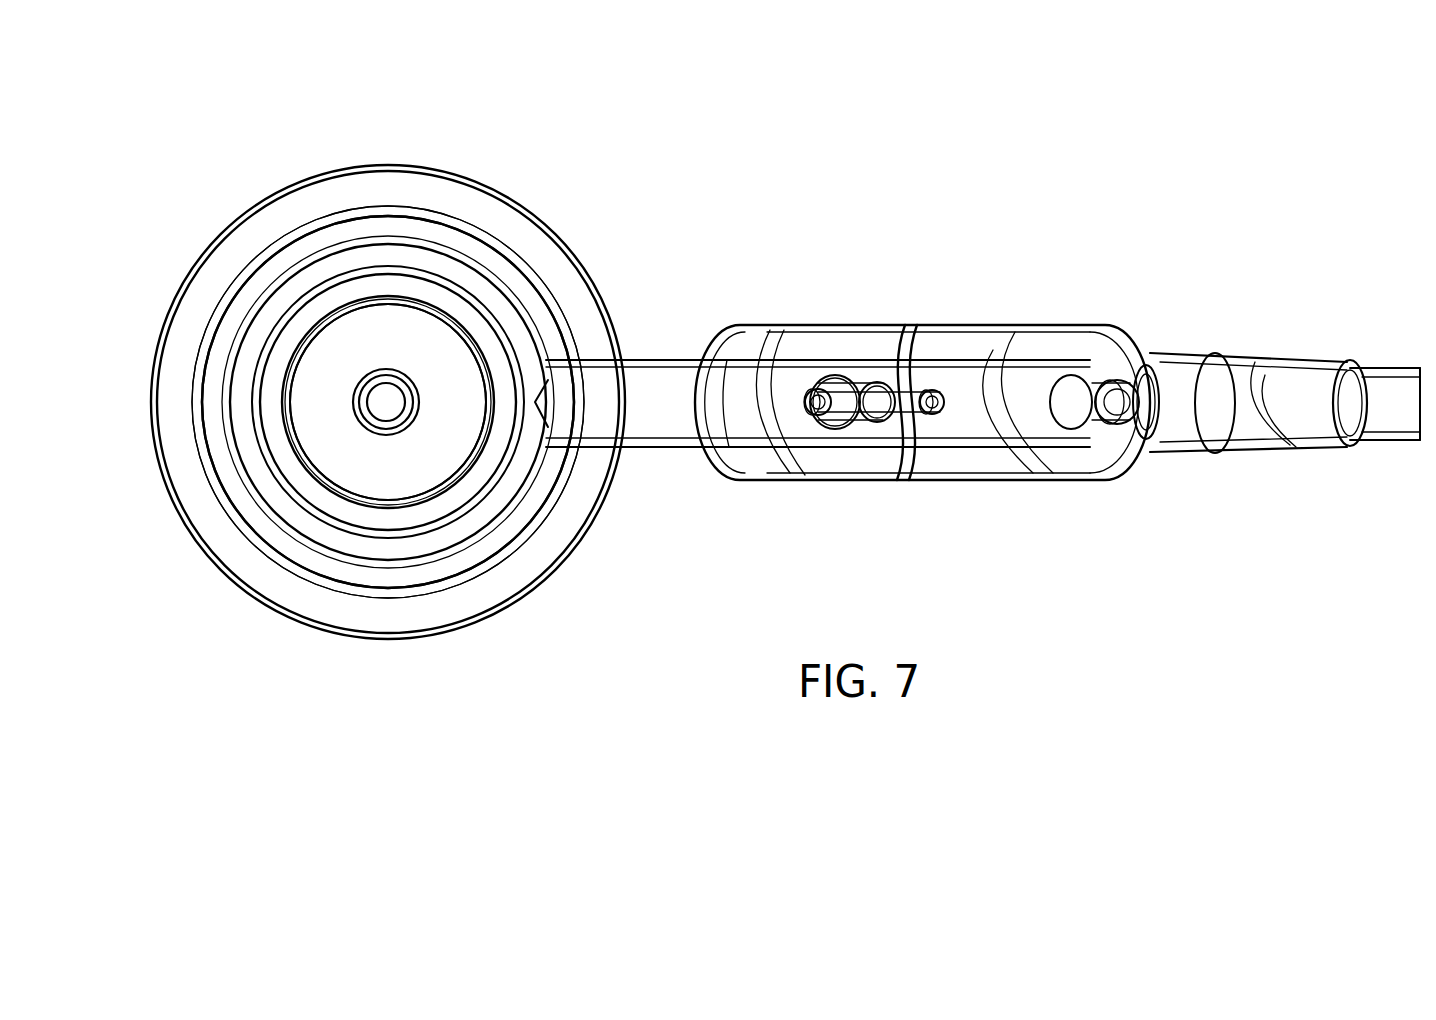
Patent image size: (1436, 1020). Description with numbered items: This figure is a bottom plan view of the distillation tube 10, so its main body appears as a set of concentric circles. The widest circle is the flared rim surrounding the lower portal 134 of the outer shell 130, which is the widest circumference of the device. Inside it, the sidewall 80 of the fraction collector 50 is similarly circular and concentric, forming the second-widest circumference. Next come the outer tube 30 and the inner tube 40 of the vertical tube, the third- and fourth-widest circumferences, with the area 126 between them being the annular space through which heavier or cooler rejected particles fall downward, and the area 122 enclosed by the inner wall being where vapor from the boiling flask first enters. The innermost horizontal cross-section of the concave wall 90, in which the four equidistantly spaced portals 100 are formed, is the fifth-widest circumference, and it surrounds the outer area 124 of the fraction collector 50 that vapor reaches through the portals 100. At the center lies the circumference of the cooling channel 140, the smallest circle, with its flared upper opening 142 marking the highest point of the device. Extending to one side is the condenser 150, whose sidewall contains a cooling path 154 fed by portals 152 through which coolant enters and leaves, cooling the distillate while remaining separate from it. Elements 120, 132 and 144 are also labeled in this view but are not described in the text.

The distillation tube 10 is at (372, 658).
The outer tube 30 is at (437, 587).
The inner tube 40 is at (497, 522).
The fraction collector 50 is at (513, 252).
The sidewall 80 is at (468, 228).
The concave wall 90 is at (413, 502).
The portal 100 is at (332, 320).
The hub face 120 is at (348, 468).
The area enclosed by the inner wall 122 is at (300, 518).
The outer area 124 is at (280, 438).
The area between the inner wall and the outer wall 126 is at (242, 498).
The outer shell 130 is at (582, 502).
The notch 132 is at (544, 405).
The lower portal 134 is at (573, 543).
The cooling channel 140 is at (383, 372).
The upper opening 142 is at (410, 412).
The central opening 144 is at (396, 395).
The condenser 150 is at (988, 480).
The portals 152 is at (1142, 450).
The cooling path 154 is at (1058, 460).